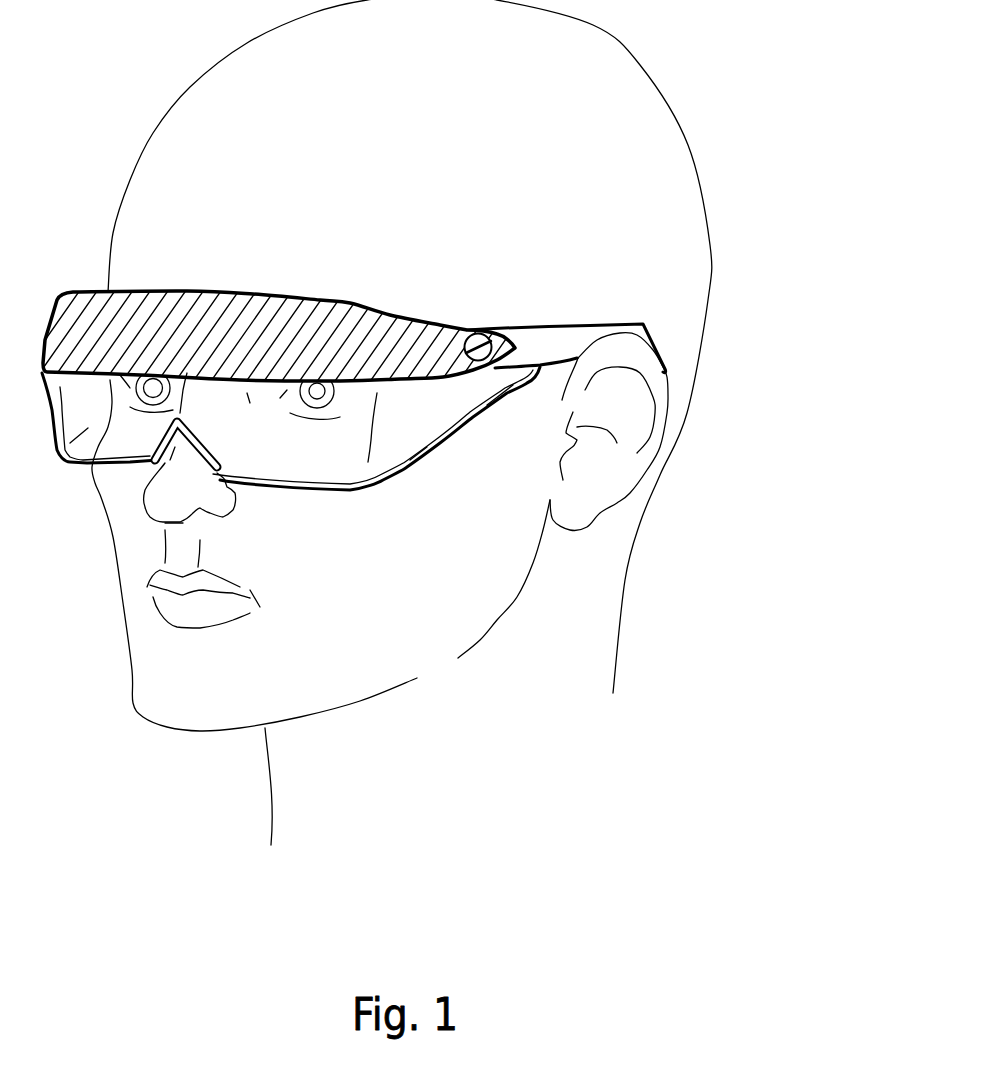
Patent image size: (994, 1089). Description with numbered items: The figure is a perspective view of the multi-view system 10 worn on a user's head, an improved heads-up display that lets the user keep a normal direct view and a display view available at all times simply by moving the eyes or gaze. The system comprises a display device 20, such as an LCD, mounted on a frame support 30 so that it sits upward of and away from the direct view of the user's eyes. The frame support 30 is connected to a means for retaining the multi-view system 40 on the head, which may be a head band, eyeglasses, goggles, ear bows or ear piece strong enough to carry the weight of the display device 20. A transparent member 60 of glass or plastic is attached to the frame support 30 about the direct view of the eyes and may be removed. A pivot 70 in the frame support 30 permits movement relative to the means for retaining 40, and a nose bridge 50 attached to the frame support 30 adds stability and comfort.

The multi-view system 10 is at (734, 235).
The display device 20 is at (212, 318).
The frame support 30 is at (355, 307).
The means for retaining the multi-view system 40 is at (558, 326).
The nose bridge 50 is at (208, 447).
The transparent member 60 is at (350, 447).
The pivot 70 is at (490, 355).